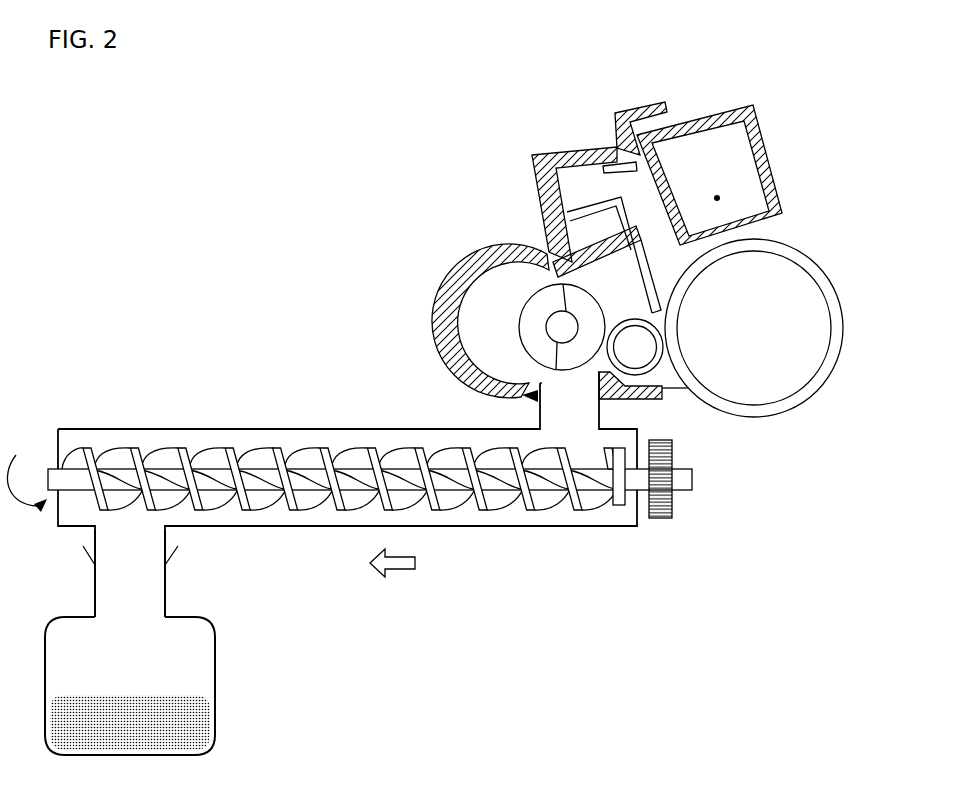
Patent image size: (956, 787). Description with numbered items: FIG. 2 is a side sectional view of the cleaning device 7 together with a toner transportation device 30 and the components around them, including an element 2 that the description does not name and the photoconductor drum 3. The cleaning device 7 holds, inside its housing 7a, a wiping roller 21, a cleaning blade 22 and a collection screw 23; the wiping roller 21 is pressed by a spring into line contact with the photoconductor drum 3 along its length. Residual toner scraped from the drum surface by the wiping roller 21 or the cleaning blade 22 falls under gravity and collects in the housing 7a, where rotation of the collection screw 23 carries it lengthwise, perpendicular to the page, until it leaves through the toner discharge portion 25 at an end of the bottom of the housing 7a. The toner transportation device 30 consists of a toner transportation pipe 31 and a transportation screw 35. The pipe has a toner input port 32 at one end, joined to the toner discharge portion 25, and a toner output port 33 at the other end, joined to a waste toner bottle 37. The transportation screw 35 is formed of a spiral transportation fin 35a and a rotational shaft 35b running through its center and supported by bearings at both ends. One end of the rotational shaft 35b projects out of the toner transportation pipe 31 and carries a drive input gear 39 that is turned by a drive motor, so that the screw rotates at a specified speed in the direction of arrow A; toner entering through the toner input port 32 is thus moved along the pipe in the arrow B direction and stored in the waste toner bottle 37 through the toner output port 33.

The toner cartridge 2 is at (783, 150).
The photoconductor drum 3 is at (827, 277).
The cleaning device 7 is at (485, 181).
The housing 7a is at (488, 308).
The wiping roller 21 is at (650, 372).
The cleaning blade 22 is at (650, 300).
The collection screw 23 is at (516, 292).
The toner discharge portion 25 is at (562, 392).
The toner transportation device 30 is at (311, 391).
The toner transportation pipe 31 is at (200, 429).
The toner input port 32 is at (553, 412).
The toner output port 33 is at (145, 540).
The transportation screw 35 is at (370, 553).
The transportation fin 35a is at (540, 502).
The rotational shaft 35b is at (493, 480).
The waste toner bottle 37 is at (216, 673).
The drive input gear 39 is at (662, 518).